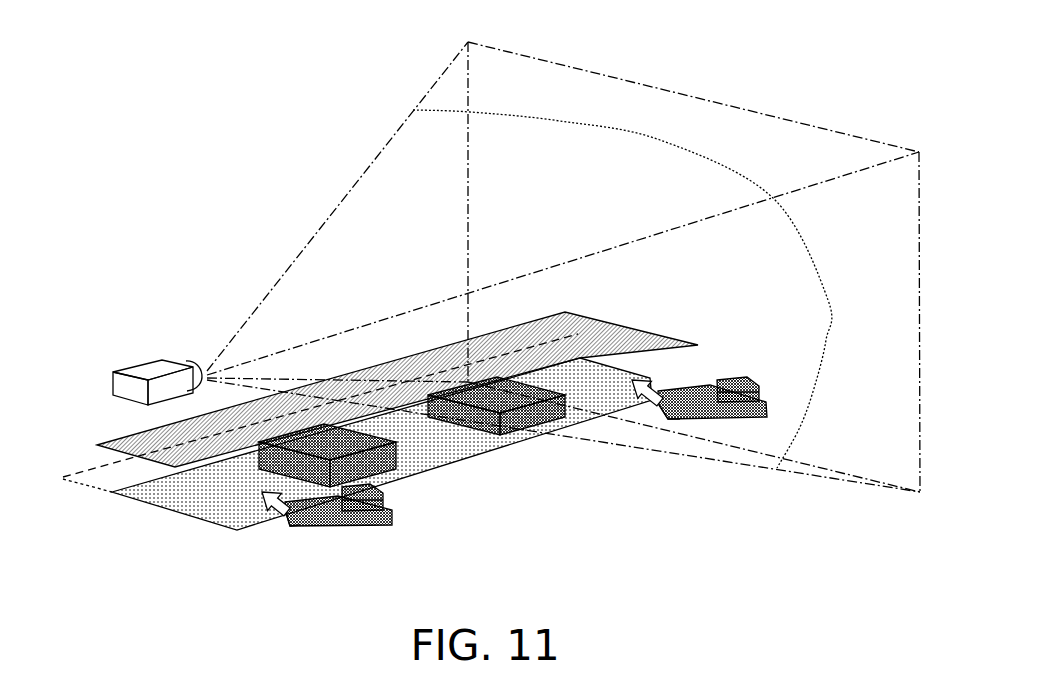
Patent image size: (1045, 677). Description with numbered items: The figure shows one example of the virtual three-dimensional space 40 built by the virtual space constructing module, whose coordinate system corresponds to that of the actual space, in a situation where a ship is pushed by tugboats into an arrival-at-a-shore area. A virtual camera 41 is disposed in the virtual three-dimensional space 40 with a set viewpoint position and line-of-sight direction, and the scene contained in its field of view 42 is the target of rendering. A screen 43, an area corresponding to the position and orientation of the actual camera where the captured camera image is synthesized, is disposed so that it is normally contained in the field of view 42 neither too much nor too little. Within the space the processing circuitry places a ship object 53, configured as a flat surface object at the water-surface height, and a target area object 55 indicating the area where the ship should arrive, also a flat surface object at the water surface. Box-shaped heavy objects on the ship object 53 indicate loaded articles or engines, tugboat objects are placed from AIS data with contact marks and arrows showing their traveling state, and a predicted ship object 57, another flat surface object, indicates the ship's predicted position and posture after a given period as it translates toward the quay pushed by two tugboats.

The virtual three-dimensional space 40 is at (252, 134).
The virtual camera 41 is at (152, 368).
The field of view 42 is at (310, 232).
The screen 43 is at (448, 110).
The ship object 53 is at (450, 447).
The target area object 55 is at (598, 345).
The predicted ship object 57 is at (68, 483).